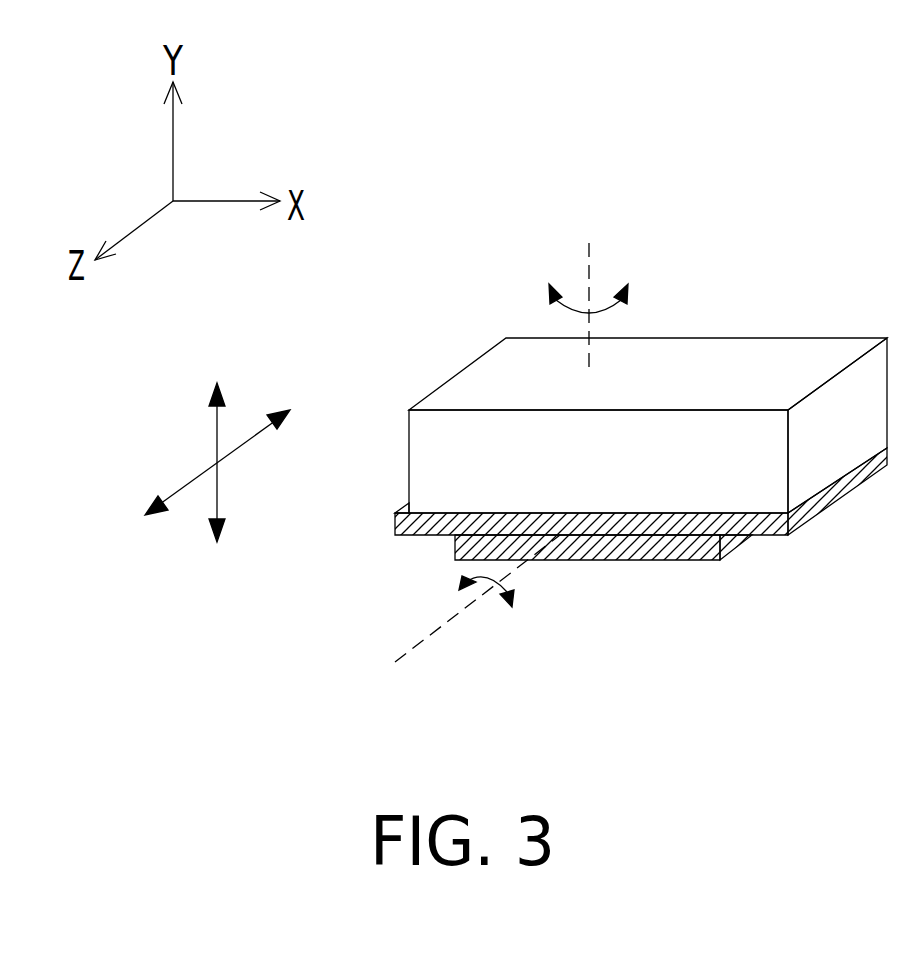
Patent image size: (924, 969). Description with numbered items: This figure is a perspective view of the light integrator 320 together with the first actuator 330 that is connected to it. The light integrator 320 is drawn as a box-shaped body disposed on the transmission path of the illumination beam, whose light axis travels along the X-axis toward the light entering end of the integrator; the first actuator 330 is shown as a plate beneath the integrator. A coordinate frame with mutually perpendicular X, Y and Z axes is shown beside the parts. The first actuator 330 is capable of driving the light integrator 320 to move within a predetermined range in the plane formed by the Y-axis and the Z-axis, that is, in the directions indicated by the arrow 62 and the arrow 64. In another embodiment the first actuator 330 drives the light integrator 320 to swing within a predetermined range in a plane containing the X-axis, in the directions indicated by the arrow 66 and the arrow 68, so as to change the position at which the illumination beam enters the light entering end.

The arrow 62 is at (216, 442).
The arrow 64 is at (198, 477).
The arrow 66 is at (600, 306).
The arrow 68 is at (505, 586).
The light integrator 320 is at (823, 350).
The first actuator 330 is at (760, 534).